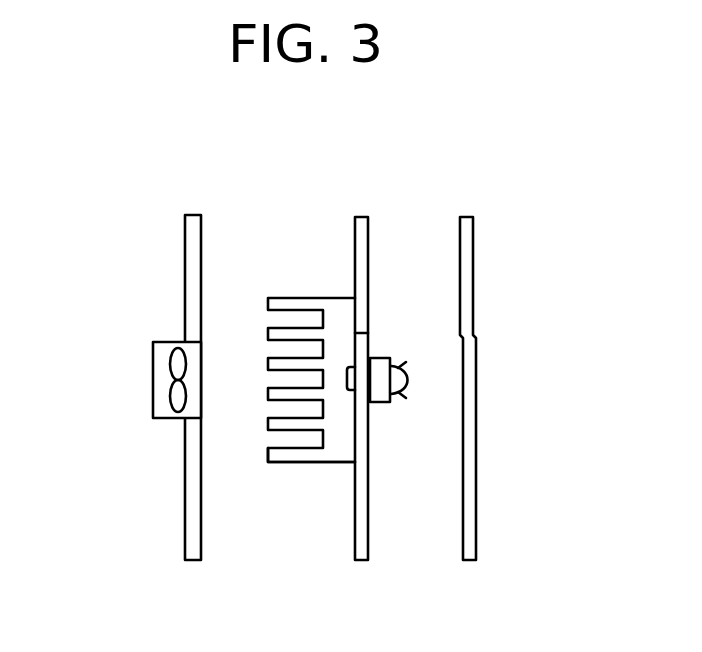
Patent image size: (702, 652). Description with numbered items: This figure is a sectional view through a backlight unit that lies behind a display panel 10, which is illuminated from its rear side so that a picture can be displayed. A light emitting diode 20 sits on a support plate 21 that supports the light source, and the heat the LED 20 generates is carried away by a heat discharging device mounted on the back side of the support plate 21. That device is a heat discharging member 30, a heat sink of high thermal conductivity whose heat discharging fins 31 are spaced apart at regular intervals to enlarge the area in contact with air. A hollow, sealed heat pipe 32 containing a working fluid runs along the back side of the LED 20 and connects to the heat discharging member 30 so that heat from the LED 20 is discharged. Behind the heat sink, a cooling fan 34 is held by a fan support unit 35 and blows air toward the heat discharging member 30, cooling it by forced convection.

The display panel 10 is at (476, 355).
The light emitting diode 20 is at (388, 358).
The support plate 21 is at (368, 220).
The heat discharging member 30 is at (280, 295).
The heat discharging fin 31 is at (288, 462).
The heat pipe 32 is at (350, 391).
The cooling fan 34 is at (153, 357).
The fan support unit 35 is at (185, 258).